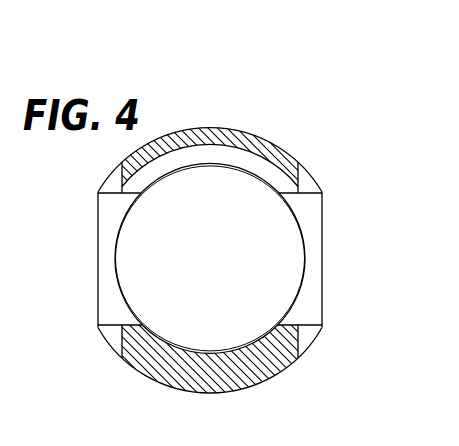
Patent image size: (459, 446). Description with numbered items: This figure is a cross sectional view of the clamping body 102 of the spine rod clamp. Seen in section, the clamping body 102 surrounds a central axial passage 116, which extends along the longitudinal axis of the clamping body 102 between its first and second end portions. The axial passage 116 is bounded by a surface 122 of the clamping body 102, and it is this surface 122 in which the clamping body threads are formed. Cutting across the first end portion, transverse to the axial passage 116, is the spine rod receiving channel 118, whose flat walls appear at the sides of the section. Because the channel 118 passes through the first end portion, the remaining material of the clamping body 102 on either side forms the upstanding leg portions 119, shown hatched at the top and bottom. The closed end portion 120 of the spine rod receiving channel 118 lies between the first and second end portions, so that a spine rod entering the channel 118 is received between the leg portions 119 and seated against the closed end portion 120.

The clamping body 102 is at (262, 120).
The axial passage 116 is at (242, 217).
The spine rod receiving channel 118 is at (340, 238).
The upstanding leg portions 119 is at (208, 129).
The closed end portion 120 is at (320, 275).
The surface 122 is at (157, 182).